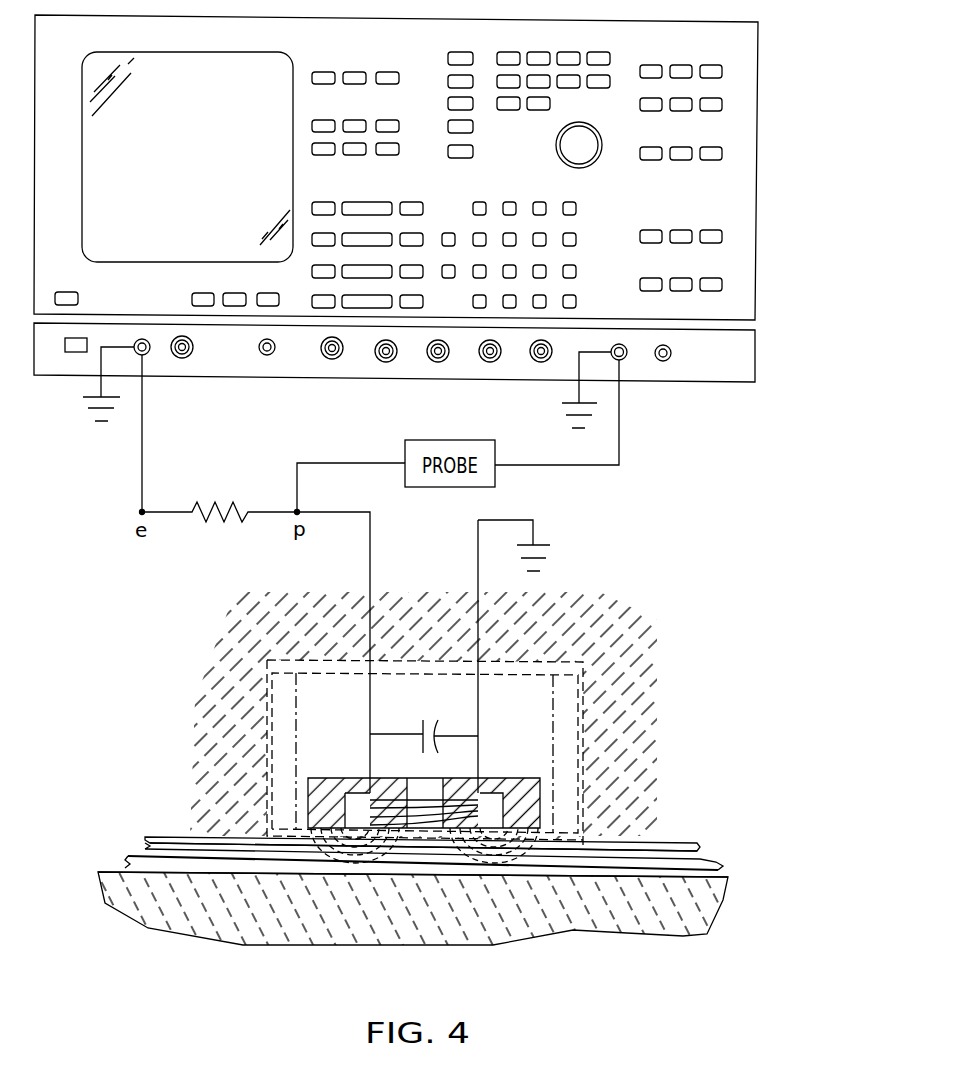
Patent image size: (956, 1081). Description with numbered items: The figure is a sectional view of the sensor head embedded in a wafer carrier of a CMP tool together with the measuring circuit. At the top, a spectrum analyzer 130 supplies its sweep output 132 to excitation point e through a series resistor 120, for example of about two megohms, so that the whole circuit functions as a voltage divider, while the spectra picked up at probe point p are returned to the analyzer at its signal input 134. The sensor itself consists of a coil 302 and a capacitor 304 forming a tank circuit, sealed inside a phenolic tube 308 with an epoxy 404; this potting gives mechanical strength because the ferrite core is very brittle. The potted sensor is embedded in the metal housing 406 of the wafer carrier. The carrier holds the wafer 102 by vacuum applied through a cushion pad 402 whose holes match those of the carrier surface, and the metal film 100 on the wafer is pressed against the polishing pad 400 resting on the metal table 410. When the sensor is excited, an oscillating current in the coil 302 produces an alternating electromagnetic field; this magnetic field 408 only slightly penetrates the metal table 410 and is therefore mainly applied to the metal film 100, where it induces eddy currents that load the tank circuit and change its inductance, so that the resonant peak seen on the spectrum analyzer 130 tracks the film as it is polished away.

The spectrum analyzer 130 is at (758, 134).
The sweep output 132 is at (142, 448).
The signal input connector 134 is at (618, 438).
The resistor 120 is at (207, 500).
The epoxy 404 is at (318, 675).
The metal housing 406 is at (560, 620).
The phenolic tube 308 is at (258, 712).
The capacitor 304 is at (419, 727).
The coil 302 is at (429, 792).
The magnetic field 408 is at (500, 884).
The cushion pad 402 is at (655, 843).
The wafer 102 is at (143, 848).
The metal film 100 is at (207, 857).
The polishing pad 400 is at (698, 868).
The metal table 410 is at (462, 919).